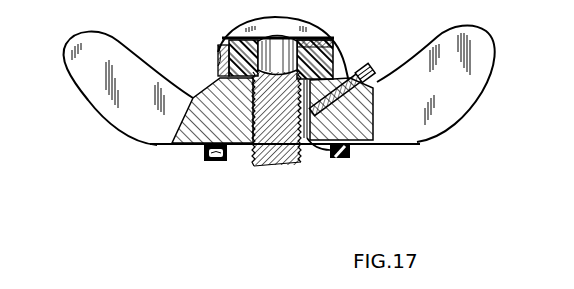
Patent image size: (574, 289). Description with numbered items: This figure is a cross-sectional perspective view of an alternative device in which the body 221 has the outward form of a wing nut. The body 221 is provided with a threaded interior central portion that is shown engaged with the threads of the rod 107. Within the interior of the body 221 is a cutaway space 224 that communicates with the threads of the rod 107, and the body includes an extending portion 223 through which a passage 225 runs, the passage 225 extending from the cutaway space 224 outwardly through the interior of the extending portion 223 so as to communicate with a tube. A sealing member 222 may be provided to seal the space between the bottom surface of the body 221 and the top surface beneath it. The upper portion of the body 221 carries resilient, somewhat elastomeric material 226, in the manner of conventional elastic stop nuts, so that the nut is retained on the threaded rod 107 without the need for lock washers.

The rod 107 is at (268, 164).
The body 221 is at (132, 128).
The sealing member 222 is at (214, 158).
The extending portion 223 is at (360, 90).
The cutaway space 224 is at (307, 122).
The passage 225 is at (363, 72).
The resilient elastomeric material 226 is at (227, 46).